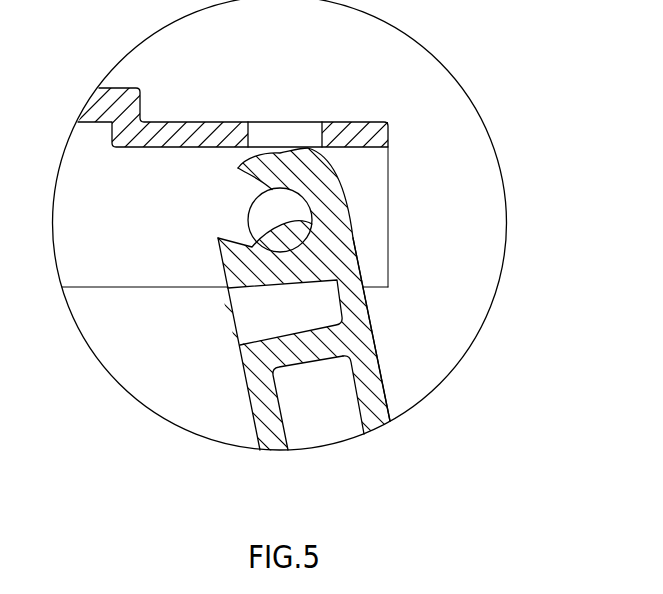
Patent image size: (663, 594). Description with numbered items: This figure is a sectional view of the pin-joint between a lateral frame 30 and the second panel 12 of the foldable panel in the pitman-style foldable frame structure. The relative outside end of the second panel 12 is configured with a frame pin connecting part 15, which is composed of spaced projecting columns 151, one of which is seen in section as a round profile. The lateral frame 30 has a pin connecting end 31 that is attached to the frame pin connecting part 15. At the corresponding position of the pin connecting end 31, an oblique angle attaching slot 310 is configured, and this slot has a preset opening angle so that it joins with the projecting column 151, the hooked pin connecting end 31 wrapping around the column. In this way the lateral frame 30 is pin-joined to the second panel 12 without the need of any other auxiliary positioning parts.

The second panel 12 is at (373, 117).
The frame pin connecting part 15 is at (236, 218).
The projecting column 151 is at (257, 203).
The lateral frame 30 is at (247, 393).
The pin connecting end 31 is at (300, 157).
The oblique angle attaching slot 310 is at (312, 224).